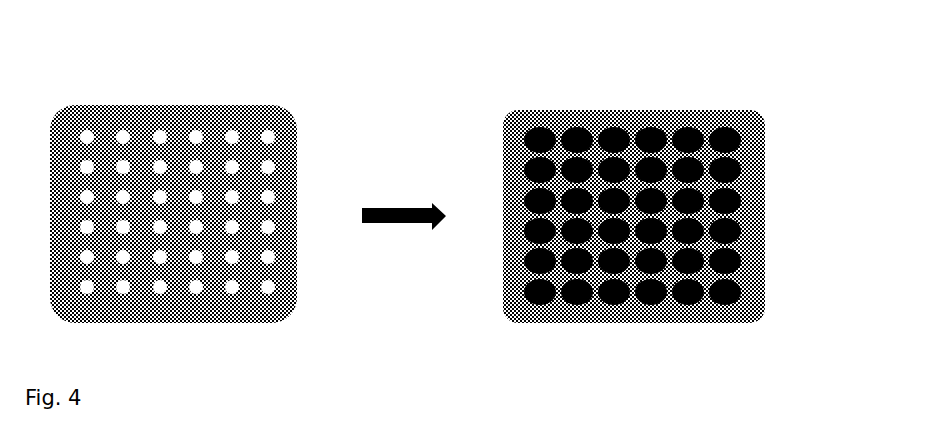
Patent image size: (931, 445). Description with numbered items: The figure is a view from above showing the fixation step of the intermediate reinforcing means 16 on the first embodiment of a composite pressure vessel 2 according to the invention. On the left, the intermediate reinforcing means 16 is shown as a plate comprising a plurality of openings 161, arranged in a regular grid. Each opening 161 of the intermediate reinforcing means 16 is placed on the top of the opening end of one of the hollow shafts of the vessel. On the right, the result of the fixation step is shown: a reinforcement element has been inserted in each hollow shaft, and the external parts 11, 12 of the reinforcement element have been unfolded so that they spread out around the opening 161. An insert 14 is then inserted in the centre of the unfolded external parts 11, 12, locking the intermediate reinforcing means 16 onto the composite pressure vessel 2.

The composite pressure vessel 2 is at (678, 172).
The external part of the reinforcement element 11 is at (583, 116).
The external part of the reinforcement element 12 is at (620, 117).
The insert 14 is at (598, 123).
The intermediate reinforcing means 16 is at (99, 92).
The opening 161 is at (189, 122).